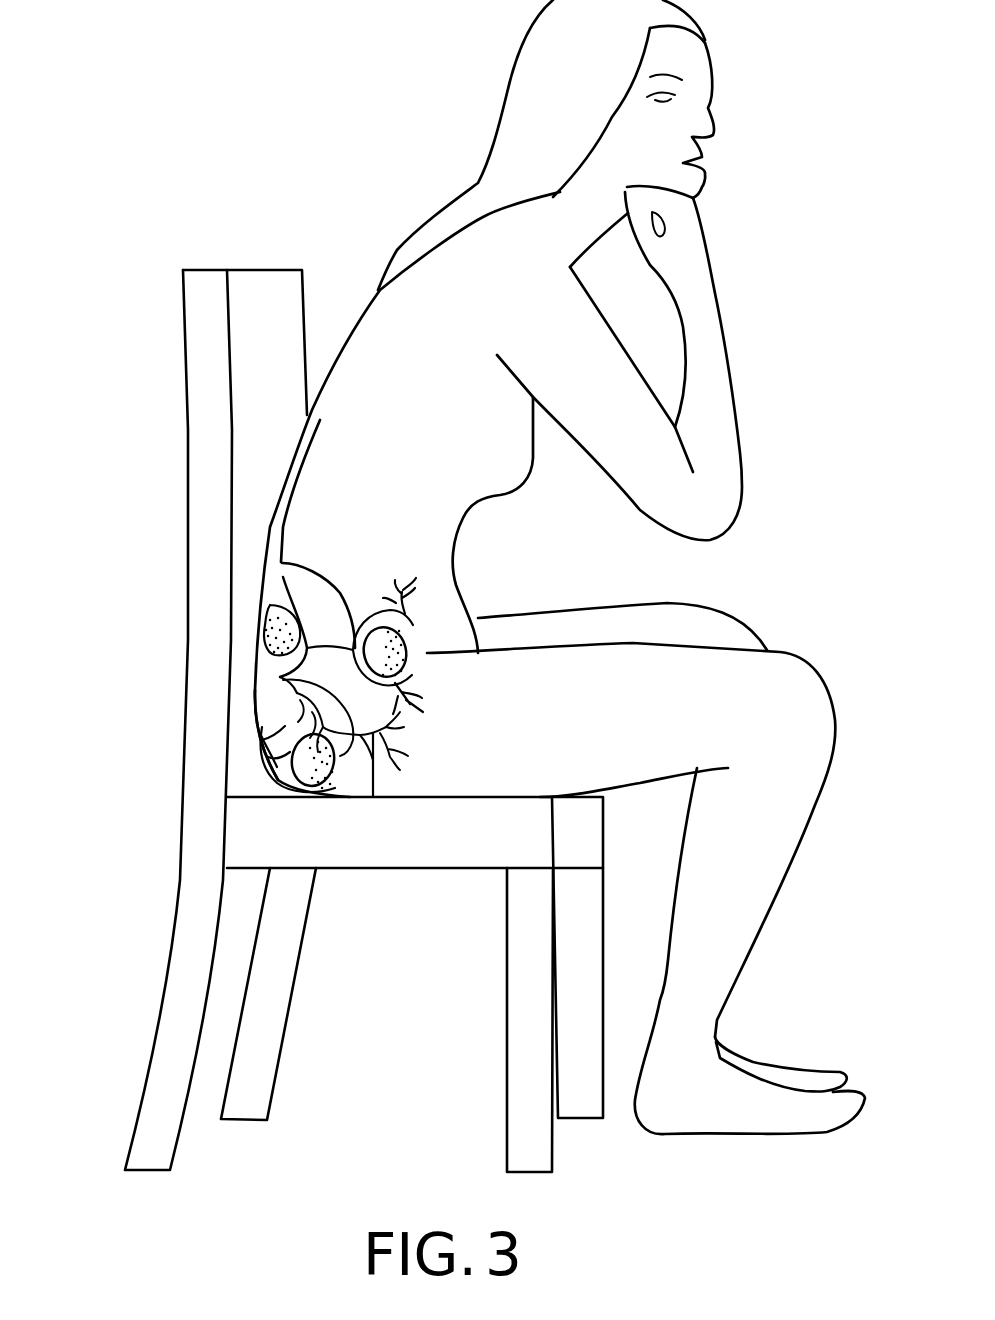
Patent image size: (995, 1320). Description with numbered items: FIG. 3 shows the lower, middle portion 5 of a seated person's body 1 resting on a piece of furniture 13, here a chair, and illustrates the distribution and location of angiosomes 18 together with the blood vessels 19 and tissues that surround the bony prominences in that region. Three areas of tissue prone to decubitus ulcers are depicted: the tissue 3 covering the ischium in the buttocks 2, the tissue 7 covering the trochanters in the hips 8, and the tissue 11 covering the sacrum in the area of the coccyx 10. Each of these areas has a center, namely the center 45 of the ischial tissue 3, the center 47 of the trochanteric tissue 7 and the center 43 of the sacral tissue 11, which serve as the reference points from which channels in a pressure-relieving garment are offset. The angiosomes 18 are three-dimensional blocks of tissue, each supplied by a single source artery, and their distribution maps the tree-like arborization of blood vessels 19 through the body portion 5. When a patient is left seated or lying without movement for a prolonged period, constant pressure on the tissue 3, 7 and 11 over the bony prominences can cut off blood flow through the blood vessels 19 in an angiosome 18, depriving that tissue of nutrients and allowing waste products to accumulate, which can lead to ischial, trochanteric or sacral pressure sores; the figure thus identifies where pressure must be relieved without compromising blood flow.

The body 1 is at (548, 227).
The buttocks 2 is at (267, 757).
The tissue covering the ischium 3 is at (278, 790).
The middle portion of the body 5 is at (428, 592).
The tissue covering the trochanters 7 is at (410, 650).
The hips 8 is at (282, 563).
The coccyx 10 is at (270, 650).
The tissue covering the sacrum 11 is at (280, 646).
The piece of furniture 13 is at (250, 833).
The angiosome 18 is at (373, 797).
The blood vessels 19 is at (297, 693).
The center of the sacral tissue area 43 is at (273, 627).
The center of the ischial tissue area 45 is at (313, 753).
The center of the trochanteric tissue area 47 is at (383, 653).